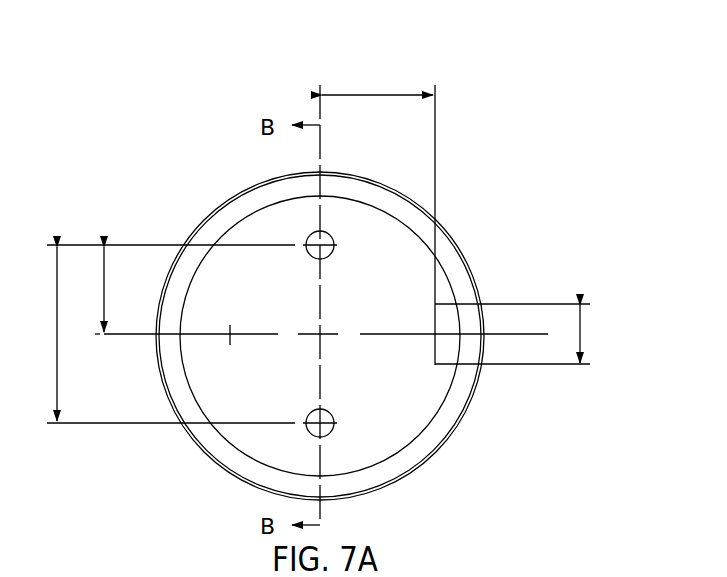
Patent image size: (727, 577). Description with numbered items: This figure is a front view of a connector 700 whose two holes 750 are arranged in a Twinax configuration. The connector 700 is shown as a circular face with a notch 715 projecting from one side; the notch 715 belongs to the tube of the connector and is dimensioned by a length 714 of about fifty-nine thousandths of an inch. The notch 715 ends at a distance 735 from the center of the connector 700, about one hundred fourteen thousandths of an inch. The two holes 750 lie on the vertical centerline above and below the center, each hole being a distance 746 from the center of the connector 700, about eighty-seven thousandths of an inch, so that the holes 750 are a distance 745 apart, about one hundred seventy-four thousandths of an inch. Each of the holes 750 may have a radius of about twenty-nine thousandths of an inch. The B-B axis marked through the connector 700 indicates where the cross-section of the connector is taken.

The connector 700 is at (351, 64).
The distance 735 is at (378, 93).
The holes 750 is at (333, 231).
The notch 715 is at (484, 302).
The length 714 is at (581, 334).
The distance 745 is at (169, 334).
The distance 746 is at (108, 284).